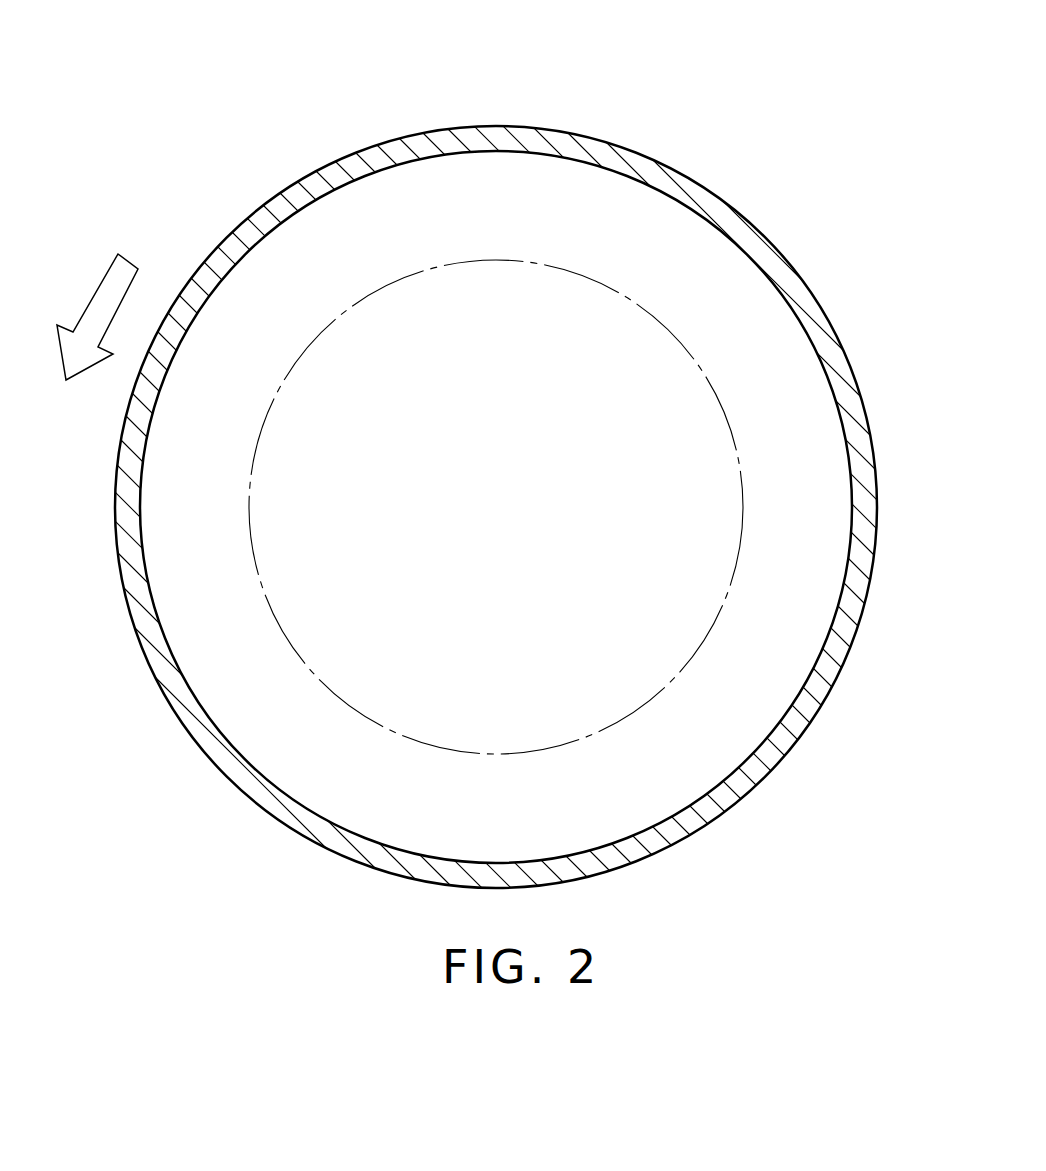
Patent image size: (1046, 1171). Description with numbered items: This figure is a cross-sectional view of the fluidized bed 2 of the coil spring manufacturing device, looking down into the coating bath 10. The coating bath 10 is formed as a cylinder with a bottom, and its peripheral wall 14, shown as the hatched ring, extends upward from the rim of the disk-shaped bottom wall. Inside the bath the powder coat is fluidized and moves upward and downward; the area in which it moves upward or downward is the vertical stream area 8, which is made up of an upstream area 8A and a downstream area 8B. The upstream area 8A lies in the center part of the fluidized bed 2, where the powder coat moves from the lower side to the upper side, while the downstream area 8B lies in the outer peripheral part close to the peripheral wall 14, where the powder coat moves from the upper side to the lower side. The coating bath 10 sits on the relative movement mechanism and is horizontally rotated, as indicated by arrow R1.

The fluidized bed 2 is at (328, 248).
The vertical stream area 8 is at (710, 82).
The upstream area 8A is at (485, 333).
The downstream area 8B is at (628, 248).
The coating bath 10 is at (882, 580).
The peripheral wall 14 is at (874, 512).
The rotation direction arrow R1 is at (95, 334).